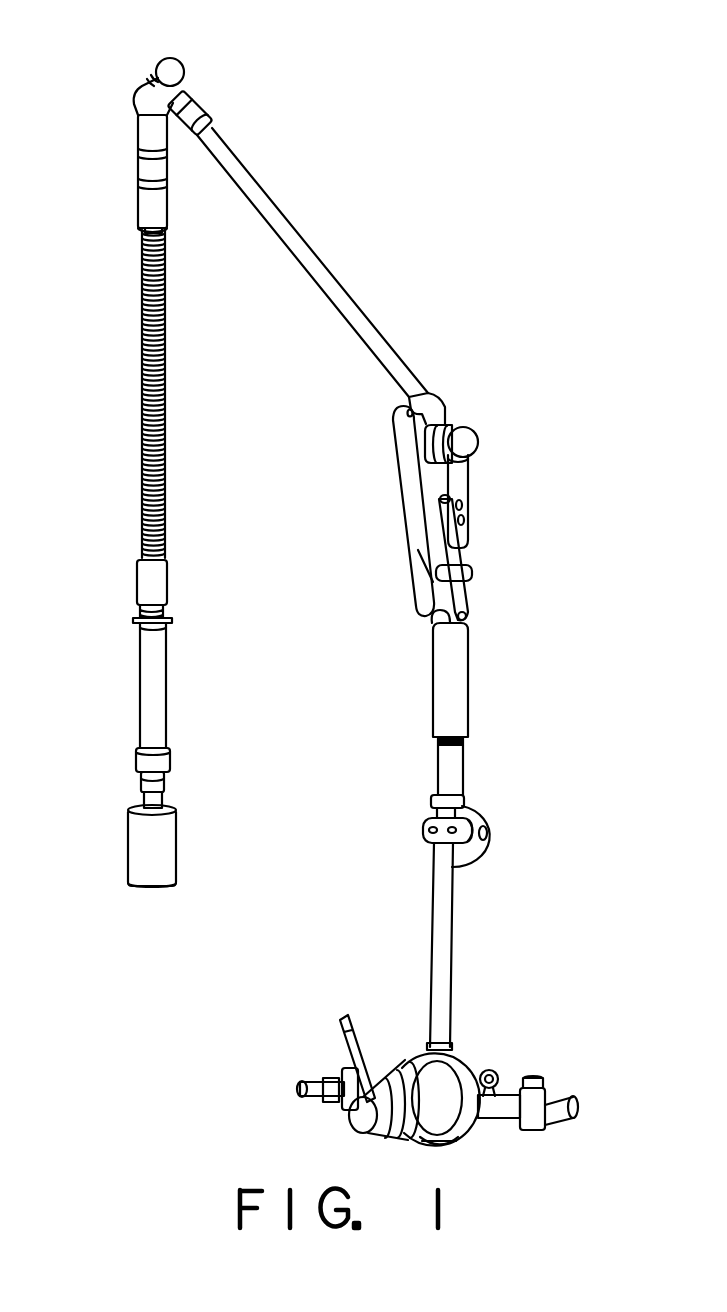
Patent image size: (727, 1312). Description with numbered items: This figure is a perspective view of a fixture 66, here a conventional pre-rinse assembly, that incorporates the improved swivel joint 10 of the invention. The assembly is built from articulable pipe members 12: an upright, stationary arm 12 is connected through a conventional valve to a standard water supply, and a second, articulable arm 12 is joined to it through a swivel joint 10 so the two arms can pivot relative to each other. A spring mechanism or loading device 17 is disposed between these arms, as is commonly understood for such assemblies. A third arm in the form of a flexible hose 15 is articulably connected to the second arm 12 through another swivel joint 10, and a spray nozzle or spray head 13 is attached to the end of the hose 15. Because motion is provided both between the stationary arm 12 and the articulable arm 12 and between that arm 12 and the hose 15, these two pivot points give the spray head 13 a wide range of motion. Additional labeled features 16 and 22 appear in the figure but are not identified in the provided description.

The swivel joint 10 is at (185, 56).
The pipe member 12 is at (343, 290).
The spray nozzle 13 is at (168, 700).
The flexible hose 15 is at (168, 408).
The handle grip 16 is at (202, 92).
The spring mechanism 17 is at (405, 507).
The elbow body 22 is at (136, 107).
The fixture 66 is at (488, 130).